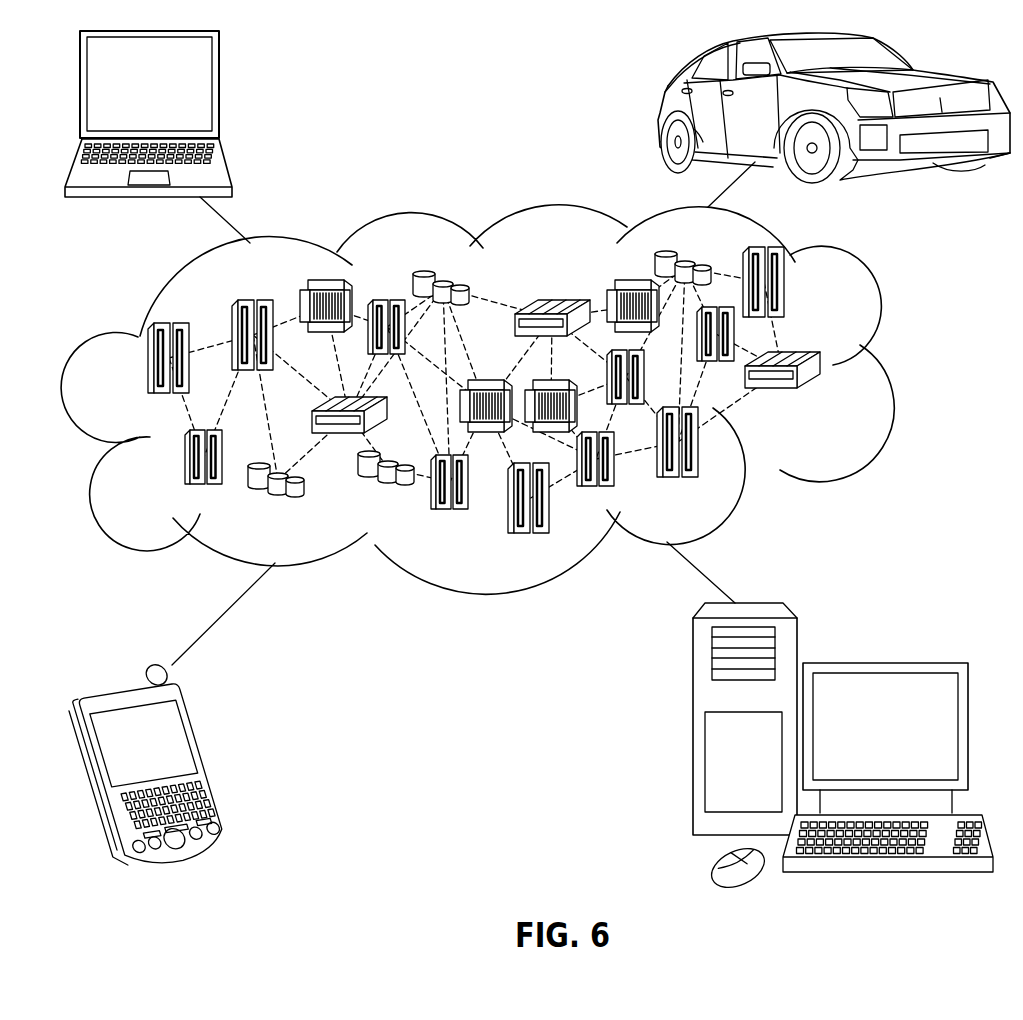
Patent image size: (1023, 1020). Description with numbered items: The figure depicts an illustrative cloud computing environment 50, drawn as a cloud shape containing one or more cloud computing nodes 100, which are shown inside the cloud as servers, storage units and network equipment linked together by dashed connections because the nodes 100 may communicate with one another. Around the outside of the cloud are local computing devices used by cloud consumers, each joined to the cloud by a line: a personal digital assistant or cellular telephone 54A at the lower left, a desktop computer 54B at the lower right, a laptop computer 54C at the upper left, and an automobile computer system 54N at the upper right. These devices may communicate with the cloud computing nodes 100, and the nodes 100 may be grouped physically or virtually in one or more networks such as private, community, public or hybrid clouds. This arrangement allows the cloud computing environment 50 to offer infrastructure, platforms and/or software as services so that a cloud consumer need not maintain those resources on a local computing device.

The cloud computing environment 50 is at (880, 368).
The cloud computing nodes 100 is at (820, 398).
The personal digital assistant (PDA) or cellular telephone 54A is at (210, 757).
The desktop computer 54B is at (882, 662).
The laptop computer 54C is at (219, 92).
The automobile computer system 54N is at (660, 108).